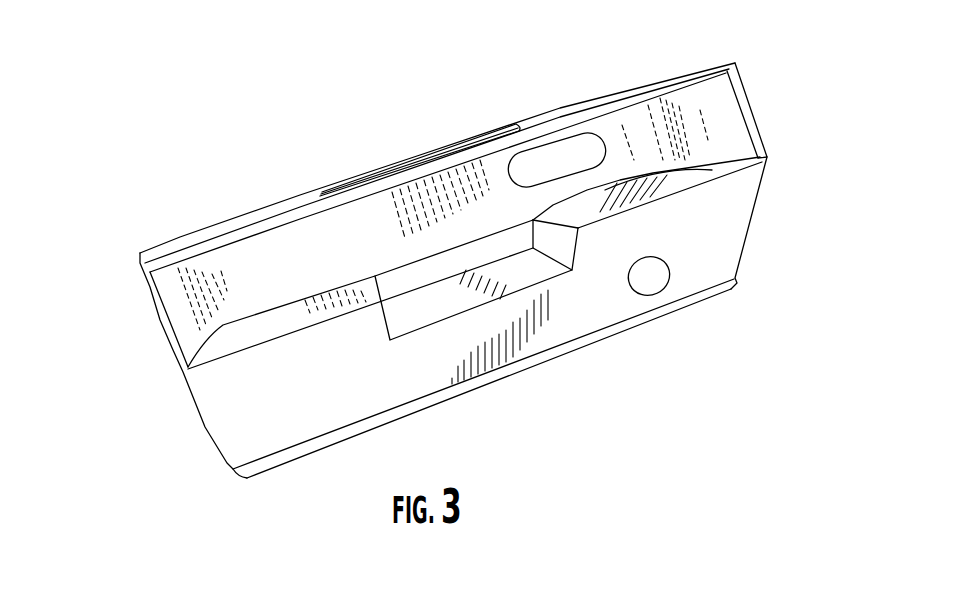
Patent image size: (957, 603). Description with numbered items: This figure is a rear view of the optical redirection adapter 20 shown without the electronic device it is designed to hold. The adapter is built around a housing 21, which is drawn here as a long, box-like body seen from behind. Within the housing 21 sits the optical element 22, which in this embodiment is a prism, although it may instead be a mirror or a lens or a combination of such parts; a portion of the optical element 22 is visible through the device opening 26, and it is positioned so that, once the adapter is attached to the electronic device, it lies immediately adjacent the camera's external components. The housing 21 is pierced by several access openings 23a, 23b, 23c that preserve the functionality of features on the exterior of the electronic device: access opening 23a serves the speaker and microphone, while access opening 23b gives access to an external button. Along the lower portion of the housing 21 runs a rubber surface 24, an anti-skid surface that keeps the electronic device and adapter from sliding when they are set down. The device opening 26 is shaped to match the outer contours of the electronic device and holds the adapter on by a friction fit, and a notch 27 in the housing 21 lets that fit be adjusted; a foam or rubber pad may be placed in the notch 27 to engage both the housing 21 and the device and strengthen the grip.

The optical redirection adapter 20 is at (210, 165).
The housing 21 is at (737, 107).
The optical element 22 is at (700, 173).
The access opening 23a is at (360, 178).
The access opening 23b is at (563, 153).
The access opening 23c is at (170, 320).
The rubber surface 24 is at (553, 356).
The device opening 26 is at (215, 295).
The notch 27 is at (435, 298).